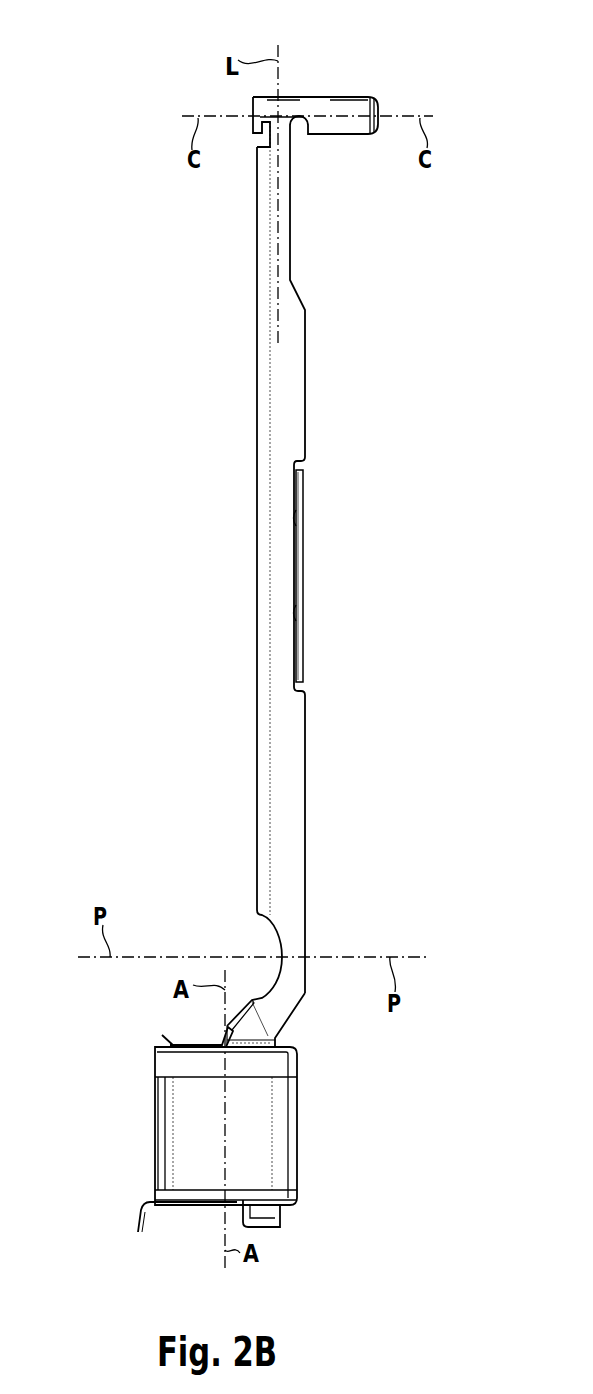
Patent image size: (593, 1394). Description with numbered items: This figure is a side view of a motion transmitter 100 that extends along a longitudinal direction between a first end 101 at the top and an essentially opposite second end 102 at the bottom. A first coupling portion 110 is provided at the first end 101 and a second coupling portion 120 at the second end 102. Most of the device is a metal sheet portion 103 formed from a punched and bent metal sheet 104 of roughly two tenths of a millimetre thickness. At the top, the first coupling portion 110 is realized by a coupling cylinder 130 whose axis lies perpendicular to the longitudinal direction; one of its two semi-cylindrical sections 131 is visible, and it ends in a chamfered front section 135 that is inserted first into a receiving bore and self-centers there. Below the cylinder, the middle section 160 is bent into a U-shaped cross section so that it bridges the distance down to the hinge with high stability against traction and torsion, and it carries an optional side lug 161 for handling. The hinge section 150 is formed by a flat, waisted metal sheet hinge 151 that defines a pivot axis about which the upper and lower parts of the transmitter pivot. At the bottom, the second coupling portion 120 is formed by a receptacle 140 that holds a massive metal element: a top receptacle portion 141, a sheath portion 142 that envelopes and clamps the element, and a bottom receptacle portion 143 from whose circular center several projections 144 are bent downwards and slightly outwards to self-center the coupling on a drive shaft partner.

The motion transmitter 100 is at (423, 410).
The first end 101 is at (250, 138).
The second end 102 is at (308, 1210).
The metal sheet portion 103 is at (230, 472).
The punched and bent metal sheet 104 is at (290, 397).
The first coupling portion 110 is at (373, 160).
The second coupling portion 120 is at (125, 1098).
The coupling cylinder 130 is at (313, 88).
The semi-cylindrical section 131 is at (338, 123).
The chamfered front section 135 is at (378, 92).
The receptacle 140 is at (307, 1090).
The top receptacle portion 141 is at (217, 1020).
The sheath portion 142 is at (290, 1140).
The bottom receptacle portion 143 is at (193, 1205).
The projections 144 is at (147, 1223).
The hinge section 150 is at (315, 940).
The flat metal sheet hinge 151 is at (273, 953).
The middle section 160 is at (243, 580).
The side lug 161 is at (297, 568).